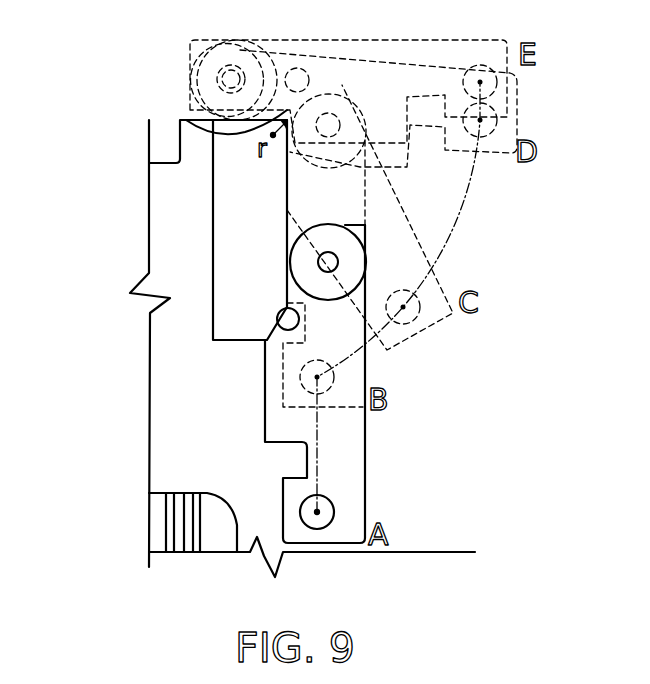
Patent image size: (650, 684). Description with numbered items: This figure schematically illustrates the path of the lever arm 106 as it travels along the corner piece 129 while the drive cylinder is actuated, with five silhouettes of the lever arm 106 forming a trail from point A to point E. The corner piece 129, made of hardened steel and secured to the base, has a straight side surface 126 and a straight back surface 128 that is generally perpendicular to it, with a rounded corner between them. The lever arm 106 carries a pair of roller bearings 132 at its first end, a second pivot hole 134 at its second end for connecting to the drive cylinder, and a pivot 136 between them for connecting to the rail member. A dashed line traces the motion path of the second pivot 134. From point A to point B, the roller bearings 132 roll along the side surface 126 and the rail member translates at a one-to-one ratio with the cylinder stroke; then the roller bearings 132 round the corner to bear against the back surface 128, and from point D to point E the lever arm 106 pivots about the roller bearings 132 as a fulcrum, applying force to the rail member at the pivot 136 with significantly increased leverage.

The lever arm 106 is at (365, 458).
The side surface 126 is at (289, 238).
The back surface 128 is at (186, 120).
The corner piece 129 is at (222, 222).
The roller bearings 132 is at (190, 78).
The second pivot hole 134 is at (335, 512).
The pivot 136 is at (287, 122).